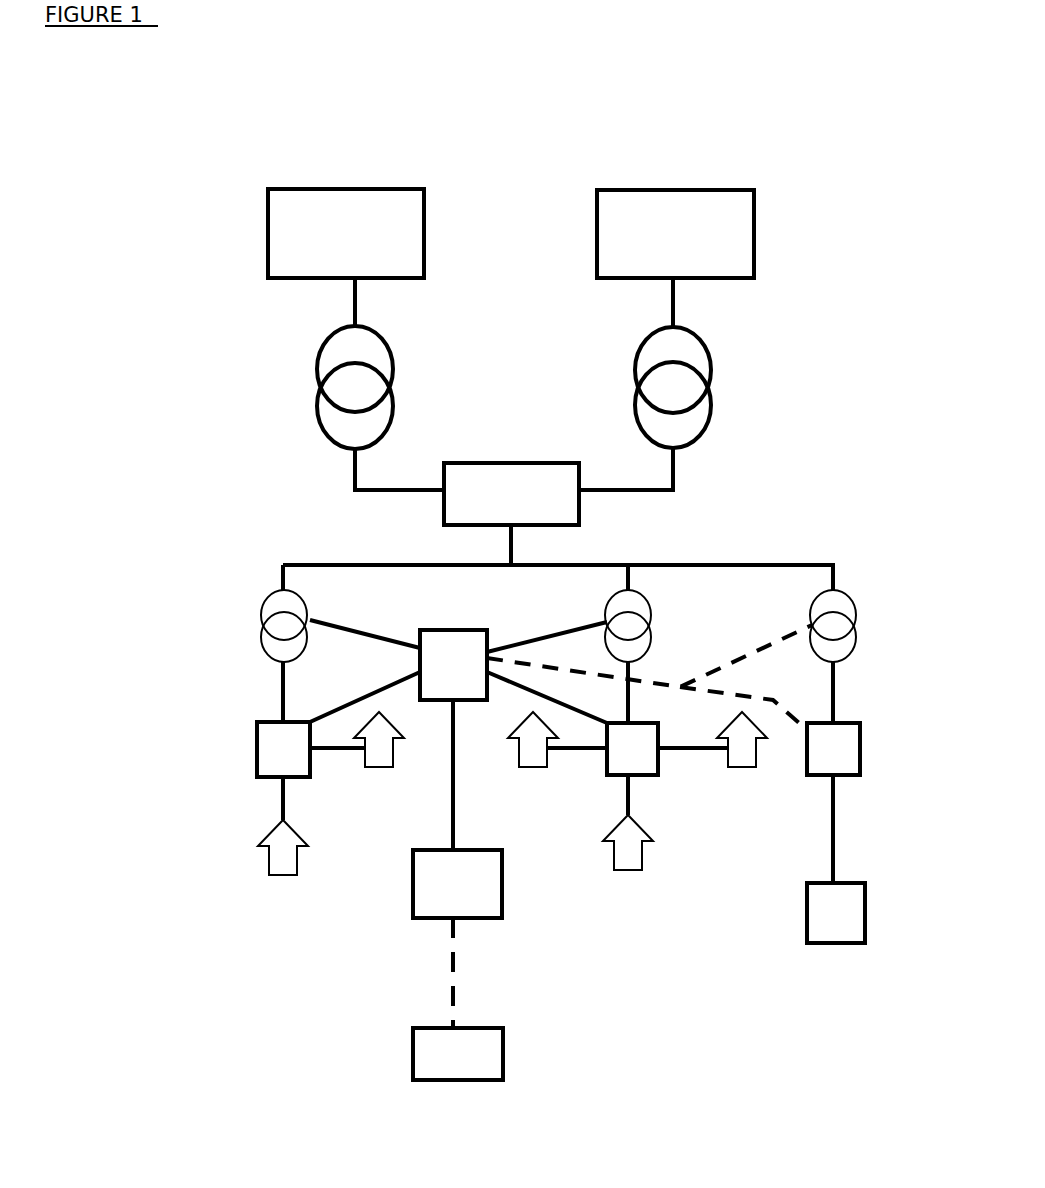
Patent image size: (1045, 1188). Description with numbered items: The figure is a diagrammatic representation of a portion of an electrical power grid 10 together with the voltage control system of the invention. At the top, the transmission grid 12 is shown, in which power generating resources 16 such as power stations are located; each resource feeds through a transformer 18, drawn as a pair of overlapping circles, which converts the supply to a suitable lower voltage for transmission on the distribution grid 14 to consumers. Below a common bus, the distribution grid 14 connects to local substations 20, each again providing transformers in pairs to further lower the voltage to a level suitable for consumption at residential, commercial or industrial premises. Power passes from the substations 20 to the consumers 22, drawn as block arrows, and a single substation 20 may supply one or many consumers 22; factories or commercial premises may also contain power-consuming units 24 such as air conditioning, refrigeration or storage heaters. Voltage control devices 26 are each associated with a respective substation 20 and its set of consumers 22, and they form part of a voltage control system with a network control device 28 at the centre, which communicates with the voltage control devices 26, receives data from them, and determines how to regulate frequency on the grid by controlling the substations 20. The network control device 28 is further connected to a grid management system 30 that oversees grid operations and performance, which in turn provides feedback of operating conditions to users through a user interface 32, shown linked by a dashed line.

The electrical power grid 10 is at (220, 463).
The transmission grid 12 is at (568, 152).
The distribution grid 14 is at (690, 805).
The power generating resources 16 is at (283, 233).
The transformers 18 is at (317, 360).
The substations 20 is at (267, 620).
The consumers 22 is at (268, 878).
The power-consuming units 24 is at (842, 945).
The voltage control devices 26 is at (257, 750).
The network control device 28 is at (440, 630).
The grid management system 30 is at (413, 917).
The user interface 32 is at (413, 1045).